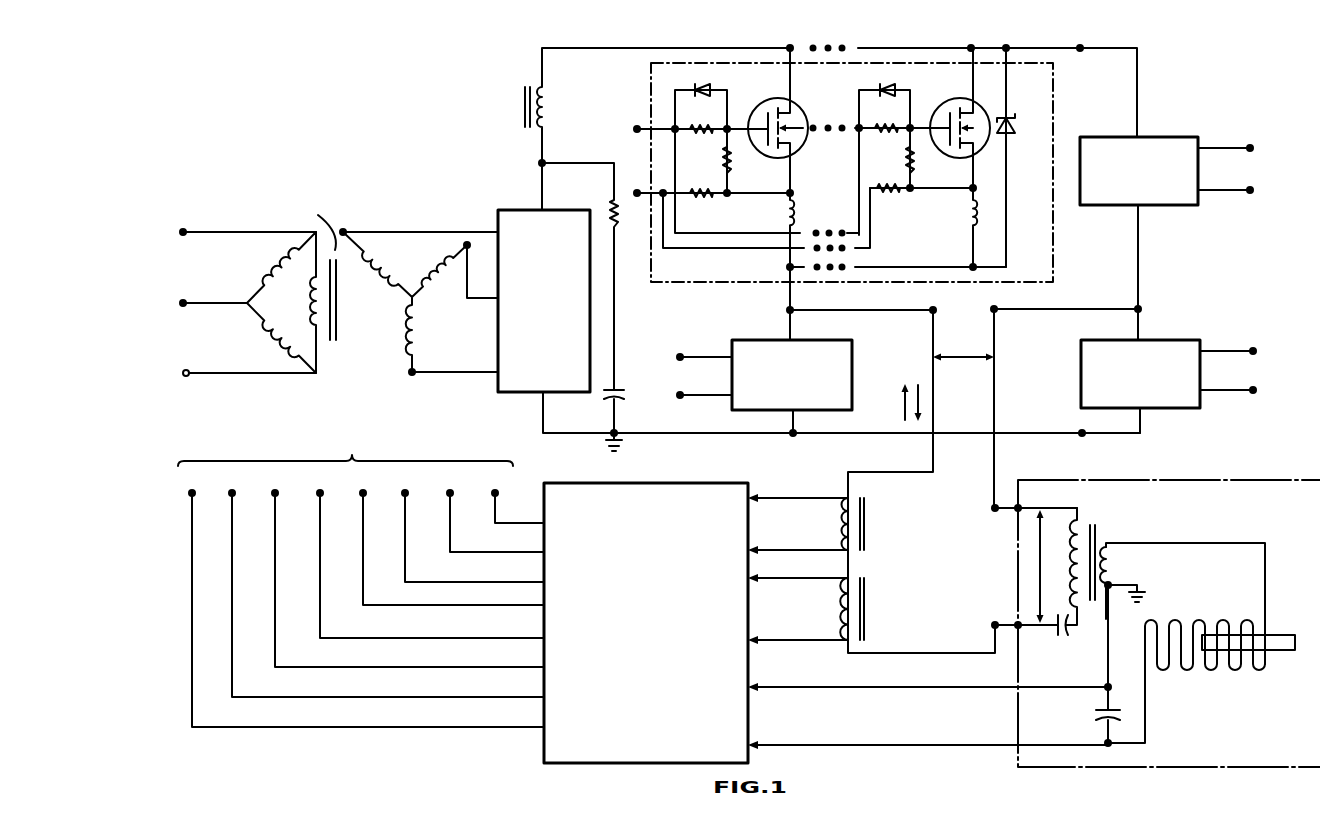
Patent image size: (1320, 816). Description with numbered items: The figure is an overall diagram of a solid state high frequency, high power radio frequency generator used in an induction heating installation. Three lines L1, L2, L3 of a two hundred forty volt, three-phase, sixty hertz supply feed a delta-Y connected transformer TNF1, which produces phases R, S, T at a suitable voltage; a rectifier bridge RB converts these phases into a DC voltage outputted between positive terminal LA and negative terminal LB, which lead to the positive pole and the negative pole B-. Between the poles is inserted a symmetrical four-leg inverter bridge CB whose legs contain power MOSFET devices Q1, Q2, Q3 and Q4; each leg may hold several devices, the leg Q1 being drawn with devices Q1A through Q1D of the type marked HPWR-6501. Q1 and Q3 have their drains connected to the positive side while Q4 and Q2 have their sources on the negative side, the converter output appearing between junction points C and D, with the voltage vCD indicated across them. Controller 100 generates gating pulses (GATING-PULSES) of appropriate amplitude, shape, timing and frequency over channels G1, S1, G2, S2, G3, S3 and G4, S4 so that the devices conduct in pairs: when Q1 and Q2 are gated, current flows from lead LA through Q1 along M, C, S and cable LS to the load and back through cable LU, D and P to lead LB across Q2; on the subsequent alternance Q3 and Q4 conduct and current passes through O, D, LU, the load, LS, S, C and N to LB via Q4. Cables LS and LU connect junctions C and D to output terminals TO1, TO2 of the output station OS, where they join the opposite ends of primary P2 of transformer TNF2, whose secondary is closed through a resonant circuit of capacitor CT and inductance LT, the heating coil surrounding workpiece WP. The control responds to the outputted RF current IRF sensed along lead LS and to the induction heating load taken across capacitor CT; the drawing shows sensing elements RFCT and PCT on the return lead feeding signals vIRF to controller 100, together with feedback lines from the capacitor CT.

The supply line L1 is at (236, 234).
The supply line L2 is at (202, 305).
The supply line L3 is at (236, 375).
The delta-Y connected transformer TNF1 is at (372, 288).
The phase R is at (482, 220).
The phase S / junction point S is at (482, 287).
The phase T is at (482, 357).
The rectifier bridge RB is at (522, 209).
The positive terminal (DC lead) LA is at (592, 50).
The negative terminal (DC lead) LB is at (598, 432).
The negative pole B- is at (1082, 435).
The power MOSFET device Q1 is at (840, 92).
The power MOSFET device Q1A is at (770, 106).
The power MOSFET device Q1D is at (945, 106).
The MOSFET type designation HPWR-6501 is at (775, 164).
The junction point M is at (888, 269).
The gating line G1 is at (475, 423).
The gating channel source line S1 is at (506, 440).
The gating line G2 is at (773, 505).
The gating channel source line S2 is at (796, 510).
The gating line G3 is at (816, 372).
The gating channel source line S3 is at (837, 382).
The gating line G4 is at (586, 450).
The gating channel source line S4 is at (608, 454).
The output junction point C is at (787, 310).
The junction point N is at (779, 331).
The inverter bridge (converter) CB is at (710, 325).
The power MOSFET device Q4 is at (804, 389).
The power MOSFET device Q3 is at (1150, 185).
The power MOSFET device Q2 is at (1151, 388).
The output lead (cable) LS is at (928, 308).
The output lead (cable) LU is at (996, 306).
The outputted RF current IRF is at (897, 402).
The converter output voltage vCD is at (965, 357).
The output junction point D is at (1147, 308).
The junction point P is at (1148, 327).
The junction point O is at (1150, 224).
The gating pulses GATING-PULSES is at (345, 450).
The controller 100 is at (593, 483).
The RF current transformer RFCT is at (861, 499).
The power current transformer PCT is at (864, 571).
The RF current sense voltage vIRF is at (785, 569).
The output terminal TO1 is at (995, 623).
The output terminal TO2 is at (995, 511).
The output station OS is at (1079, 479).
The transformer TNF2 is at (1155, 585).
The primary winding P2 is at (1061, 571).
The capacitor CT is at (1094, 716).
The inductance (heating coil) LT is at (1180, 670).
The workpiece WP is at (1276, 635).